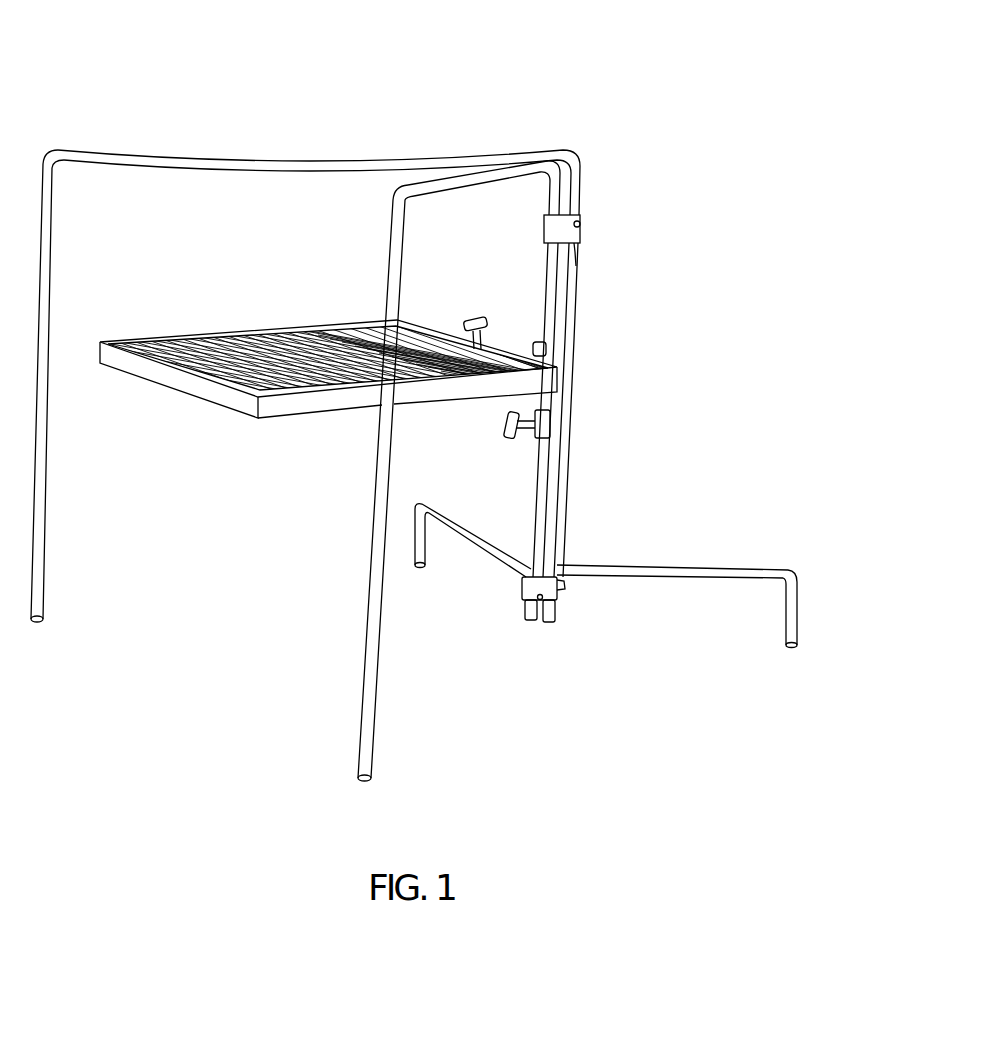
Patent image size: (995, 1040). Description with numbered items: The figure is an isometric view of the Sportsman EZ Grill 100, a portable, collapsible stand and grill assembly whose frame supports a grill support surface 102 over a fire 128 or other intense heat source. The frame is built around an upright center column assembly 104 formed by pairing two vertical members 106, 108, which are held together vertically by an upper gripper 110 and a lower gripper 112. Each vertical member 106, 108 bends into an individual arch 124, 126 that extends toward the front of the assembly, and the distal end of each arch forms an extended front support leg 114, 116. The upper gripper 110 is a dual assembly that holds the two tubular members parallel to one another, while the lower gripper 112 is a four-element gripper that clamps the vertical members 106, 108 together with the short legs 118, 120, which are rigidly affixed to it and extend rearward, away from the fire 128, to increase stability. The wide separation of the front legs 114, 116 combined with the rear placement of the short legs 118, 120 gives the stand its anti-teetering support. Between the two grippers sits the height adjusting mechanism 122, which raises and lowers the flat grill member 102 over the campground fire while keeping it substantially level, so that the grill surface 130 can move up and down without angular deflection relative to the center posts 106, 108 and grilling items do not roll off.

The grill assembly 100 is at (601, 84).
The grill support surface 102 is at (173, 383).
The upright center column assembly 104 is at (599, 273).
The vertical member 106 is at (566, 366).
The vertical member 108 is at (541, 475).
The upper gripper 110 is at (578, 218).
The lower gripper 112 is at (541, 597).
The support leg 114 is at (41, 612).
The support leg 116 is at (371, 752).
The short leg 118 is at (471, 538).
The short leg 120 is at (647, 568).
The height adjusting mechanism 122 is at (554, 340).
The arch 124 is at (530, 166).
The arch 126 is at (298, 158).
The fire 128 is at (268, 603).
The grill surface 130 is at (283, 351).